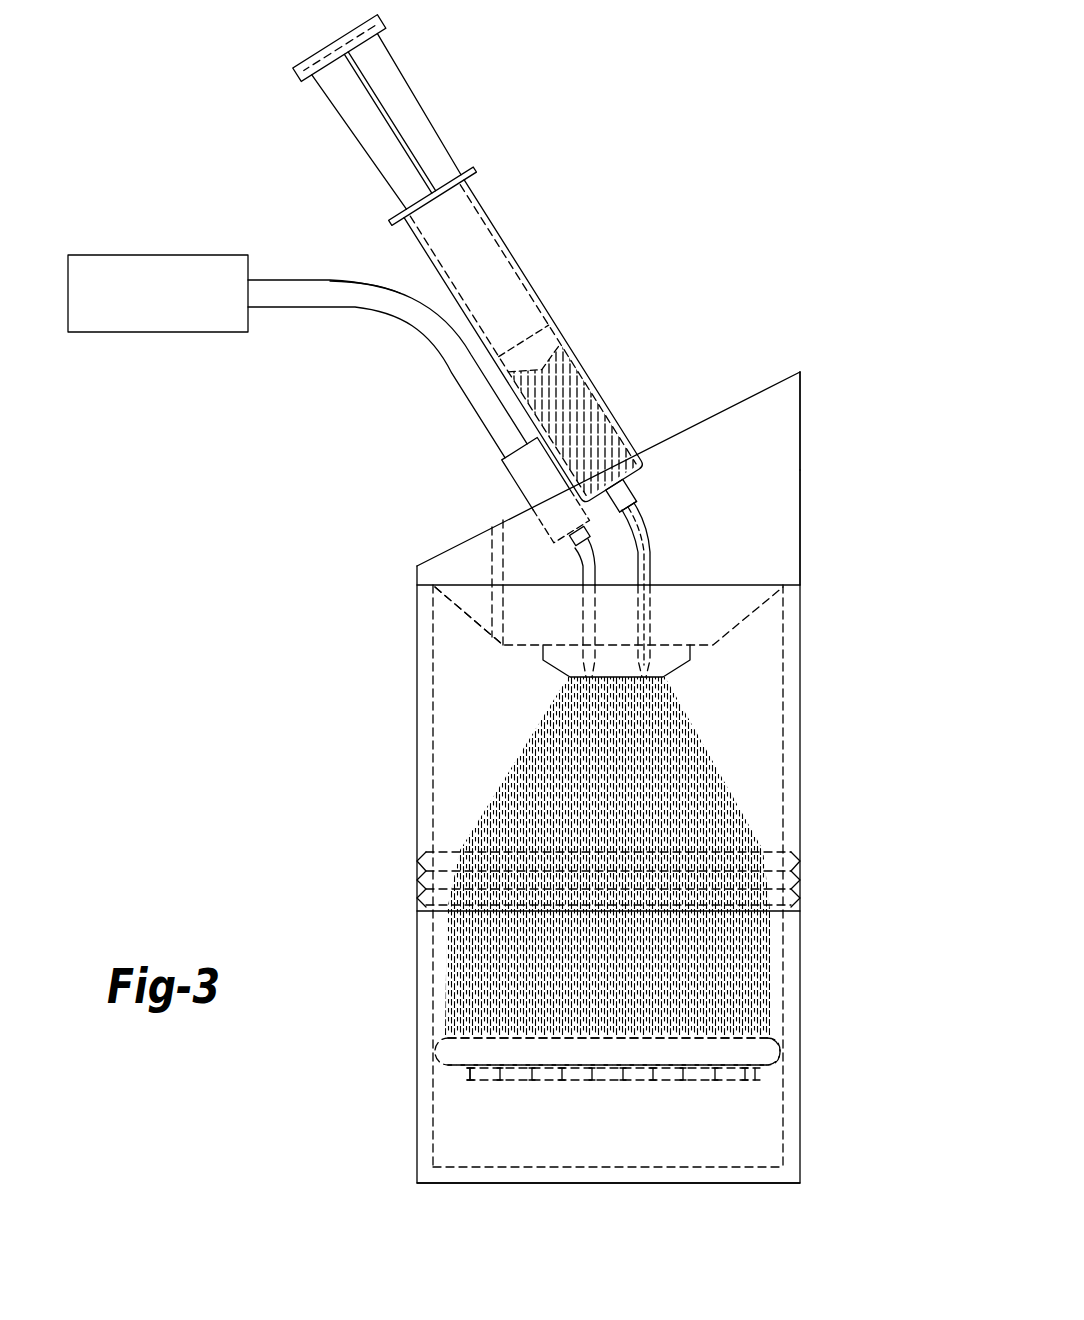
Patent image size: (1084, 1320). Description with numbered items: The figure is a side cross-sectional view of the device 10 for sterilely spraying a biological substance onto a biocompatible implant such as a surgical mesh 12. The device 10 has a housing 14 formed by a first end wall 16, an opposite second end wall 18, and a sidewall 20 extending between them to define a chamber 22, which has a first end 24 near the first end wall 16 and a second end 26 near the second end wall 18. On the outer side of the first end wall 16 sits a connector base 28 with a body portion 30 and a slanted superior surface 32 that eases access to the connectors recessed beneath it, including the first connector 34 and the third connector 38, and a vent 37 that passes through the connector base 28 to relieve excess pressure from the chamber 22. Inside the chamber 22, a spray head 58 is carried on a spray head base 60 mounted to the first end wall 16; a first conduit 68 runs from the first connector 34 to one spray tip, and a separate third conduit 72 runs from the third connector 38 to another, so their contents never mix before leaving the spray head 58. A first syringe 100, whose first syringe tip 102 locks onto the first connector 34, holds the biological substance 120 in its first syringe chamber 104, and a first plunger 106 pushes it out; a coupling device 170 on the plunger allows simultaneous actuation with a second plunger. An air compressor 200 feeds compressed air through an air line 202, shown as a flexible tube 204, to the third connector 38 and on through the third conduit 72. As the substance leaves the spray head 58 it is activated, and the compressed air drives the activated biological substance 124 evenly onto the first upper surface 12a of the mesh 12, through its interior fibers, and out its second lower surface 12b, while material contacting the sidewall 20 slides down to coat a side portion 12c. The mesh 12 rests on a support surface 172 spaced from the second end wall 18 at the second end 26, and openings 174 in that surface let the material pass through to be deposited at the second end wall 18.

The device 10 is at (190, 789).
The surgical mesh 12 is at (710, 1045).
The first upper surface 12a is at (748, 1037).
The second lower surface 12b is at (758, 1078).
The side portion 12c is at (782, 1052).
The housing 14 is at (415, 838).
The first end wall 16 is at (765, 600).
The second end wall 18 is at (443, 1157).
The sidewall 20 is at (782, 742).
The chamber 22 is at (445, 755).
The first end 24 is at (767, 686).
The second end 26 is at (663, 1150).
The connector base 28 is at (783, 467).
The body portion 30 is at (792, 508).
The superior surface 32 is at (773, 385).
The first connector 34 is at (636, 490).
The vent 37 is at (487, 565).
The third connector 38 is at (550, 537).
The spray head 58 is at (540, 655).
The spray head base 60 is at (472, 622).
The first conduit 68 is at (656, 552).
The third conduit 72 is at (580, 618).
The first syringe 100 is at (492, 213).
The first syringe tip 102 is at (640, 500).
The first syringe chamber 104 is at (600, 401).
The first plunger 106 is at (418, 118).
The biological substance 120 is at (650, 617).
The activated biological substance 124 is at (735, 967).
The coupling device 170 is at (345, 36).
The support surface 172 is at (596, 1078).
The openings 174 is at (481, 1070).
The air compressor 200 is at (115, 253).
The air line 202 is at (289, 312).
The flexible tube 204 is at (338, 278).